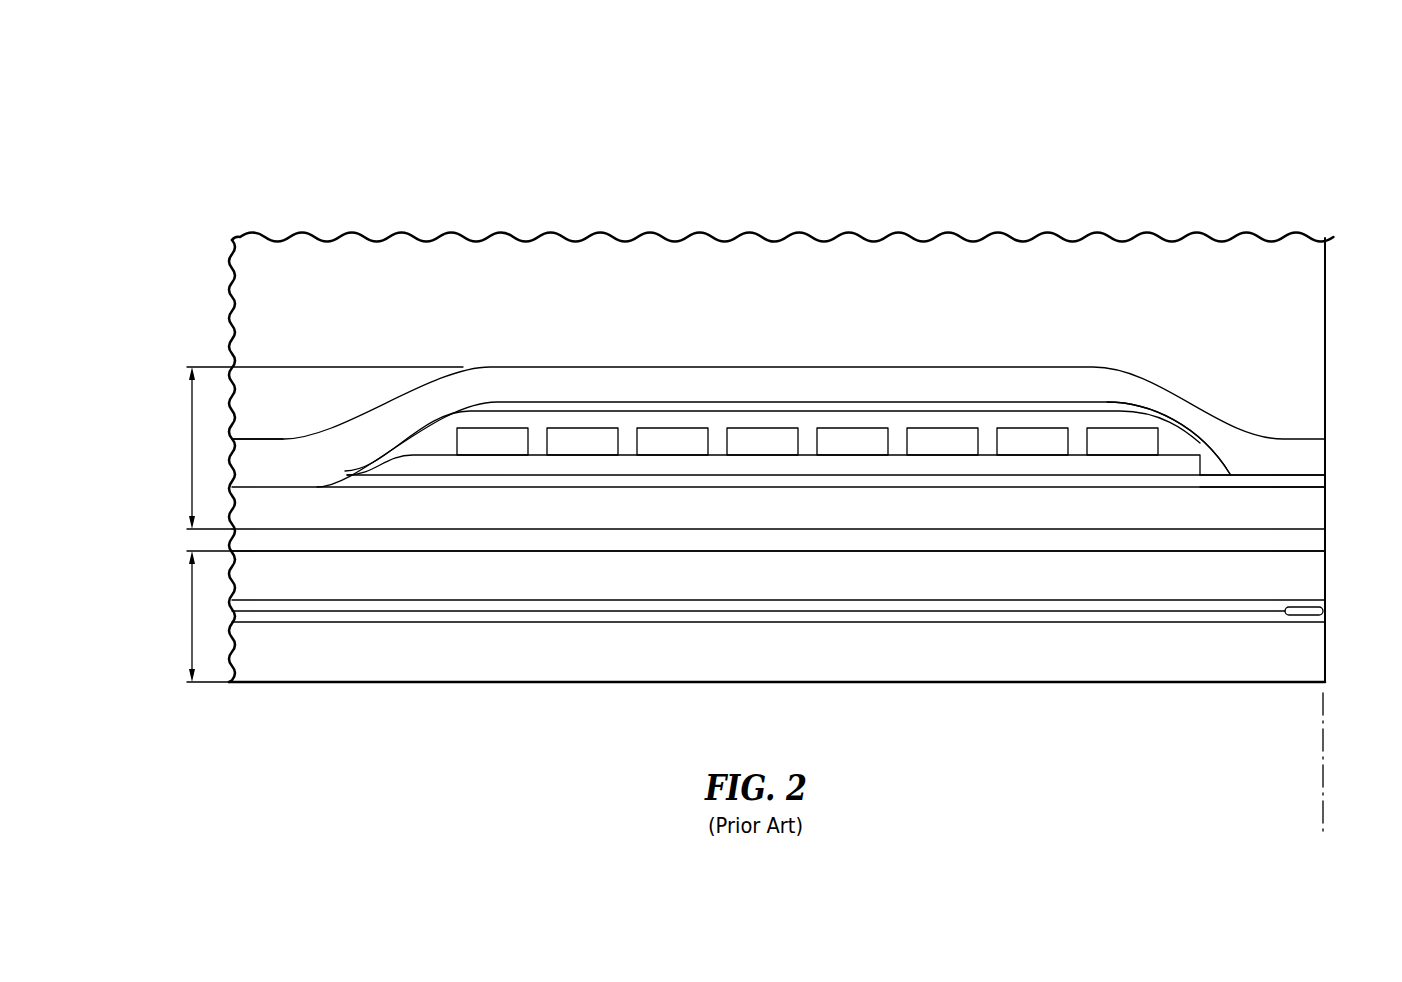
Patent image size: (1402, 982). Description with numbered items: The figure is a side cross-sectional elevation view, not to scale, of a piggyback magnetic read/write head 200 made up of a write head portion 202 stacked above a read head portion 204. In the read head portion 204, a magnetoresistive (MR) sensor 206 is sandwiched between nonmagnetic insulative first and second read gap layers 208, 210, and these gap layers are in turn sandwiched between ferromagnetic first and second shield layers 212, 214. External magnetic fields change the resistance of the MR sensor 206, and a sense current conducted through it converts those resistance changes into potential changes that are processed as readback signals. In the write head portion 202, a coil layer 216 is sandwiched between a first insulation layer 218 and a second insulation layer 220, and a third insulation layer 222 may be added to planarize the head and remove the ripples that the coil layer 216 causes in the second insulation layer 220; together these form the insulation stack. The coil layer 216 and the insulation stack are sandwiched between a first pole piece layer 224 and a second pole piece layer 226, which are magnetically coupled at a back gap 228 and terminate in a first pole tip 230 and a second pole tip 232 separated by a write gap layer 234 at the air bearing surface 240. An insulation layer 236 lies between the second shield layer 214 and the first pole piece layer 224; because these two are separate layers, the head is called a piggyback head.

The magnetic read/write head 200 is at (215, 201).
The write head portion 202 is at (188, 441).
The read head portion 204 is at (188, 607).
The magnetoresistive (MR) sensor 206 is at (1325, 612).
The first read gap layer 208 is at (858, 623).
The second read gap layer 210 is at (837, 599).
The first shield layer 212 is at (1005, 673).
The second shield layer 214 is at (1114, 586).
The coil layer 216 is at (757, 435).
The first insulation layer 218 is at (625, 463).
The second insulation layer 220 is at (1182, 438).
The third insulation layer 222 is at (549, 407).
The first pole piece layer 224 is at (1168, 520).
The second pole piece layer 226 is at (1005, 372).
The back gap 228 is at (268, 487).
The first pole tip 230 is at (1325, 510).
The second pole tip 232 is at (1325, 455).
The write gap layer 234 is at (1325, 480).
The insulation layer 236 is at (1325, 540).
The ABS 240 is at (1323, 770).